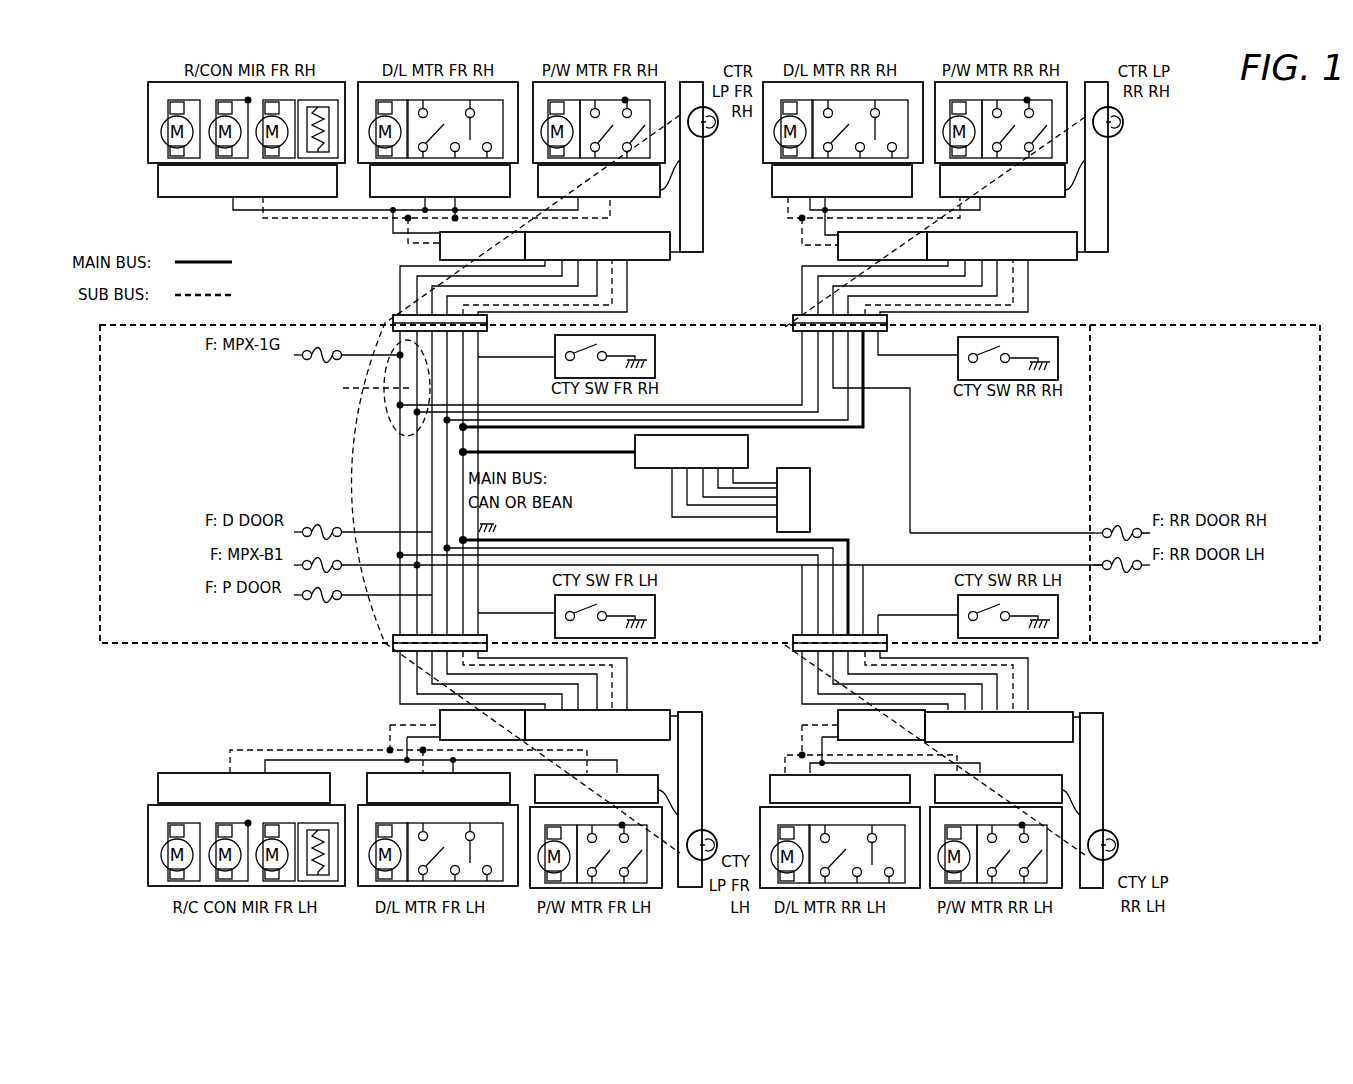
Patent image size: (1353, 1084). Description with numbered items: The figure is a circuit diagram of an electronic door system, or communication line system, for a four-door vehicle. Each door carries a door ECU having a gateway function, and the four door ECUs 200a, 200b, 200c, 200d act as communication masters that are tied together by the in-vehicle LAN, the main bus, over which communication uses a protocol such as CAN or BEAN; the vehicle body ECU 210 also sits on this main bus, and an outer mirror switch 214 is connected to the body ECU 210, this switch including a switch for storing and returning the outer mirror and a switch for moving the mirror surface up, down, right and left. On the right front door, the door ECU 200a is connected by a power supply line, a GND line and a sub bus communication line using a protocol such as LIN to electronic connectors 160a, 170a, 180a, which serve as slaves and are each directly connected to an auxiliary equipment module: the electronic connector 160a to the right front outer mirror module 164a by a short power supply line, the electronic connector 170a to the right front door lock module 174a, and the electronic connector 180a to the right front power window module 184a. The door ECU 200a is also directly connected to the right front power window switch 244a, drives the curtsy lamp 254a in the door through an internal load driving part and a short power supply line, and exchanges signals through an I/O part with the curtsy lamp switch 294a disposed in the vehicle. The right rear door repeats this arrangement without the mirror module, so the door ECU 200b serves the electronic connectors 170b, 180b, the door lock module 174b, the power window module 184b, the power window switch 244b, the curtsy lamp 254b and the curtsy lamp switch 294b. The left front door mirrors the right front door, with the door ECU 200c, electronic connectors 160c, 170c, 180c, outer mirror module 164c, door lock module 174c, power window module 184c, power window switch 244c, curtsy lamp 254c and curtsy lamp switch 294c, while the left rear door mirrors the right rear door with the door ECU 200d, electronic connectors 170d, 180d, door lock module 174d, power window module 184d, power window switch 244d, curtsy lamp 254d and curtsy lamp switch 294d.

The right front outer mirror module 164a is at (148, 110).
The electronic connector 160a is at (158, 184).
The right front door lock module 174a is at (358, 150).
The electronic connector 170a is at (385, 198).
The right front power window module 184a is at (682, 150).
The electronic connector 180a is at (618, 198).
The right front door ECU 200a is at (440, 257).
The right front power window switch 244a is at (643, 262).
The curtsy lamp 254a is at (717, 125).
The door lock module 174b is at (763, 128).
The electronic connector 170b is at (785, 207).
The power window module 184b is at (1068, 142).
The electronic connector 180b is at (1010, 198).
The door ECU 200b is at (838, 257).
The power window switch 244b is at (1040, 262).
The curtsy lamp 254b is at (1123, 122).
The curtsy lamp switch 294a is at (655, 350).
The curtsy lamp switch 294b is at (958, 360).
The curtsy lamp switch 294c is at (655, 610).
The curtsy lamp switch 294d is at (958, 610).
The vehicle body ECU 210 is at (750, 455).
The outer mirror switch 214 is at (796, 468).
The outer mirror module 164c is at (148, 833).
The electronic connector 160c is at (183, 773).
The door lock module 174c is at (358, 813).
The electronic connector 170c is at (383, 773).
The power window module 184c is at (663, 813).
The electronic connector 180c is at (660, 793).
The door ECU 200c is at (440, 720).
The power window switch 244c is at (633, 710).
The curtsy lamp 254c is at (735, 830).
The door lock module 174d is at (763, 810).
The electronic connector 170d is at (772, 773).
The power window module 184d is at (1065, 815).
The electronic connector 180d is at (1062, 790).
The door ECU 200d is at (838, 720).
The power window switch 244d is at (1040, 712).
The curtsy lamp 254d is at (1118, 845).